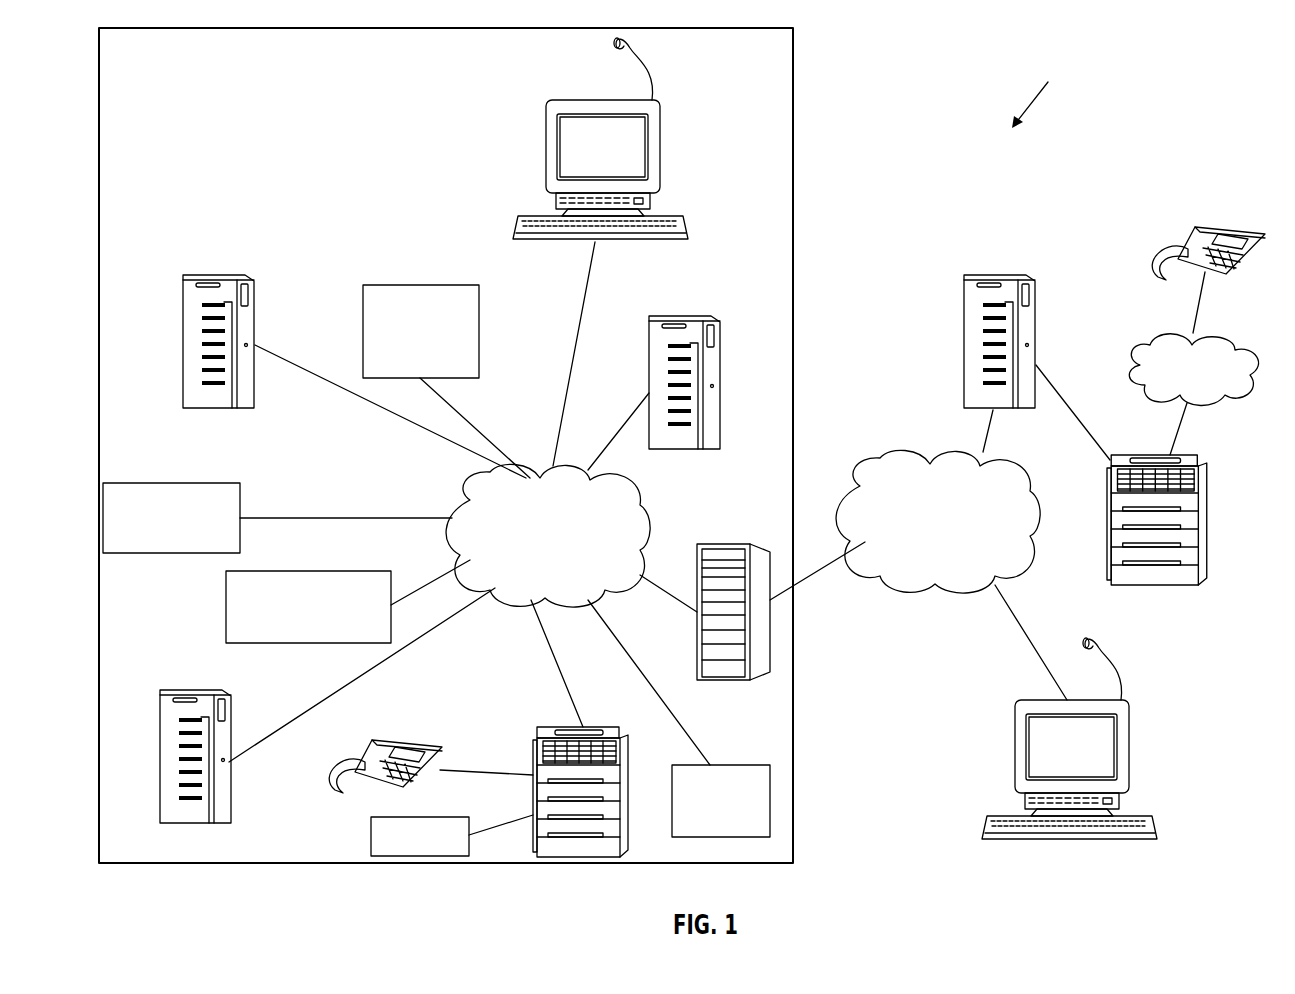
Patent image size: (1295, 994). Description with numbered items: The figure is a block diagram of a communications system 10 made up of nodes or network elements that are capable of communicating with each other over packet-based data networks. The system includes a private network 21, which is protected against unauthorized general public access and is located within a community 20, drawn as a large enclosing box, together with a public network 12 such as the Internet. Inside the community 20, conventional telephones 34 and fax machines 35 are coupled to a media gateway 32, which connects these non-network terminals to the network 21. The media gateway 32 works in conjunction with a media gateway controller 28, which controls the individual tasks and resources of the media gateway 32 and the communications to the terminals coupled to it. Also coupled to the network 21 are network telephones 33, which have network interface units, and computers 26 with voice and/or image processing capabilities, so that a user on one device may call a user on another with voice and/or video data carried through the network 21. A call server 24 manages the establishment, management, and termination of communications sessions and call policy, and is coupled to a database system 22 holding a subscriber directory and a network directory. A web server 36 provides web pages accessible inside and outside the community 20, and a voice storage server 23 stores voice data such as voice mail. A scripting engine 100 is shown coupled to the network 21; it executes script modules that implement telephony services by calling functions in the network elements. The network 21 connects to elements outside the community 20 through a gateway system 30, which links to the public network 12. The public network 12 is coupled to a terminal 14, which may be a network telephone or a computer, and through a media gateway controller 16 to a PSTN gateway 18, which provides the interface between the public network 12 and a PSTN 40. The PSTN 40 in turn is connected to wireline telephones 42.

The communications system 10 is at (1041, 93).
The public network 12 is at (876, 463).
The terminal 14 is at (1128, 740).
The media gateway controller 16 is at (1003, 275).
The PSTN gateway 18 is at (1207, 482).
The community 20 is at (793, 196).
The private network 21 is at (641, 499).
The database system 22 is at (226, 265).
The voice storage server 23 is at (344, 571).
The call server 24 is at (680, 316).
The computer 26 is at (659, 148).
The media gateway controller 28 is at (185, 690).
The gateway system 30 is at (718, 544).
The media gateway 32 is at (605, 728).
The network telephone 33 is at (206, 483).
The telephone 34 is at (392, 742).
The fax machine 35 is at (432, 817).
The web server 36 is at (733, 765).
The PSTN 40 is at (1240, 338).
The wireline telephone 42 is at (1250, 233).
The scripting engine 100 is at (437, 285).